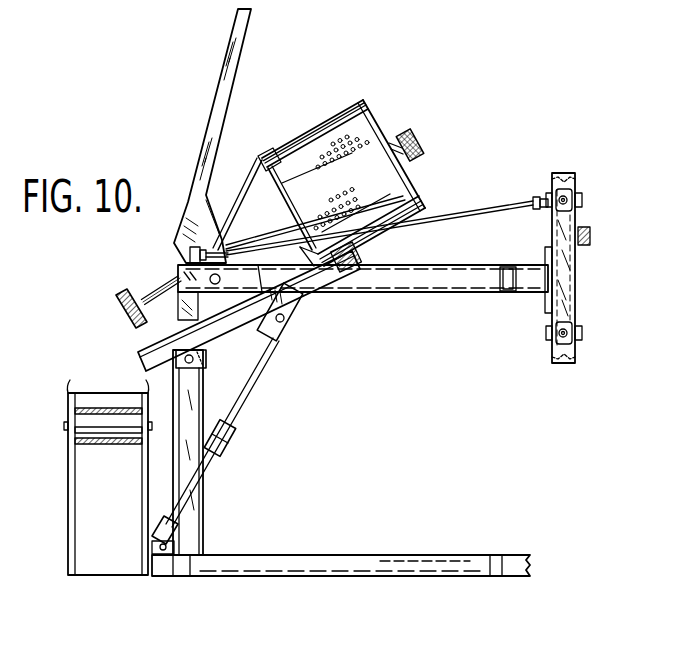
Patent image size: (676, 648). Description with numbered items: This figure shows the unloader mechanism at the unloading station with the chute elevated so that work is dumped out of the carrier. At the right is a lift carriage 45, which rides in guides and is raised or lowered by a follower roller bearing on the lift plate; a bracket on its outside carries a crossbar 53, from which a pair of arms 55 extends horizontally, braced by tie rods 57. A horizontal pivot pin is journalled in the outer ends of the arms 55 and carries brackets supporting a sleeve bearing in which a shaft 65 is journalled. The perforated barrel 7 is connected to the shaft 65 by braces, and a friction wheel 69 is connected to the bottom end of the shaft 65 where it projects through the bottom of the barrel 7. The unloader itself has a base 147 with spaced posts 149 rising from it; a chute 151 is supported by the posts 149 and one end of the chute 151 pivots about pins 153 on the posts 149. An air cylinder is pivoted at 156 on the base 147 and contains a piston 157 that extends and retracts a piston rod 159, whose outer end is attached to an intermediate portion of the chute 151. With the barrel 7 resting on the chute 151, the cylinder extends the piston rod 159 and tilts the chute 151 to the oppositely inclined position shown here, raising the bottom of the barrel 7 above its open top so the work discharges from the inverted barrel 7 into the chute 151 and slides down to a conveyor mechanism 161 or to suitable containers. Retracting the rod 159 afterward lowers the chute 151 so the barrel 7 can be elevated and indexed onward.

The perforated barrel 7 is at (326, 120).
The friction wheel 69 is at (402, 131).
The lift carriage 45 is at (552, 186).
The tie rod 57 is at (497, 212).
The shaft 65 is at (165, 290).
The arm 55 is at (437, 287).
The crossbar 53 is at (508, 295).
The chute 151 is at (290, 297).
The pin 153 is at (207, 360).
The piston rod 159 is at (246, 392).
The piston 157 is at (229, 451).
The pivot 156 is at (152, 548).
The post 149 is at (204, 506).
The base 147 is at (312, 556).
The conveyor mechanism 161 is at (114, 442).